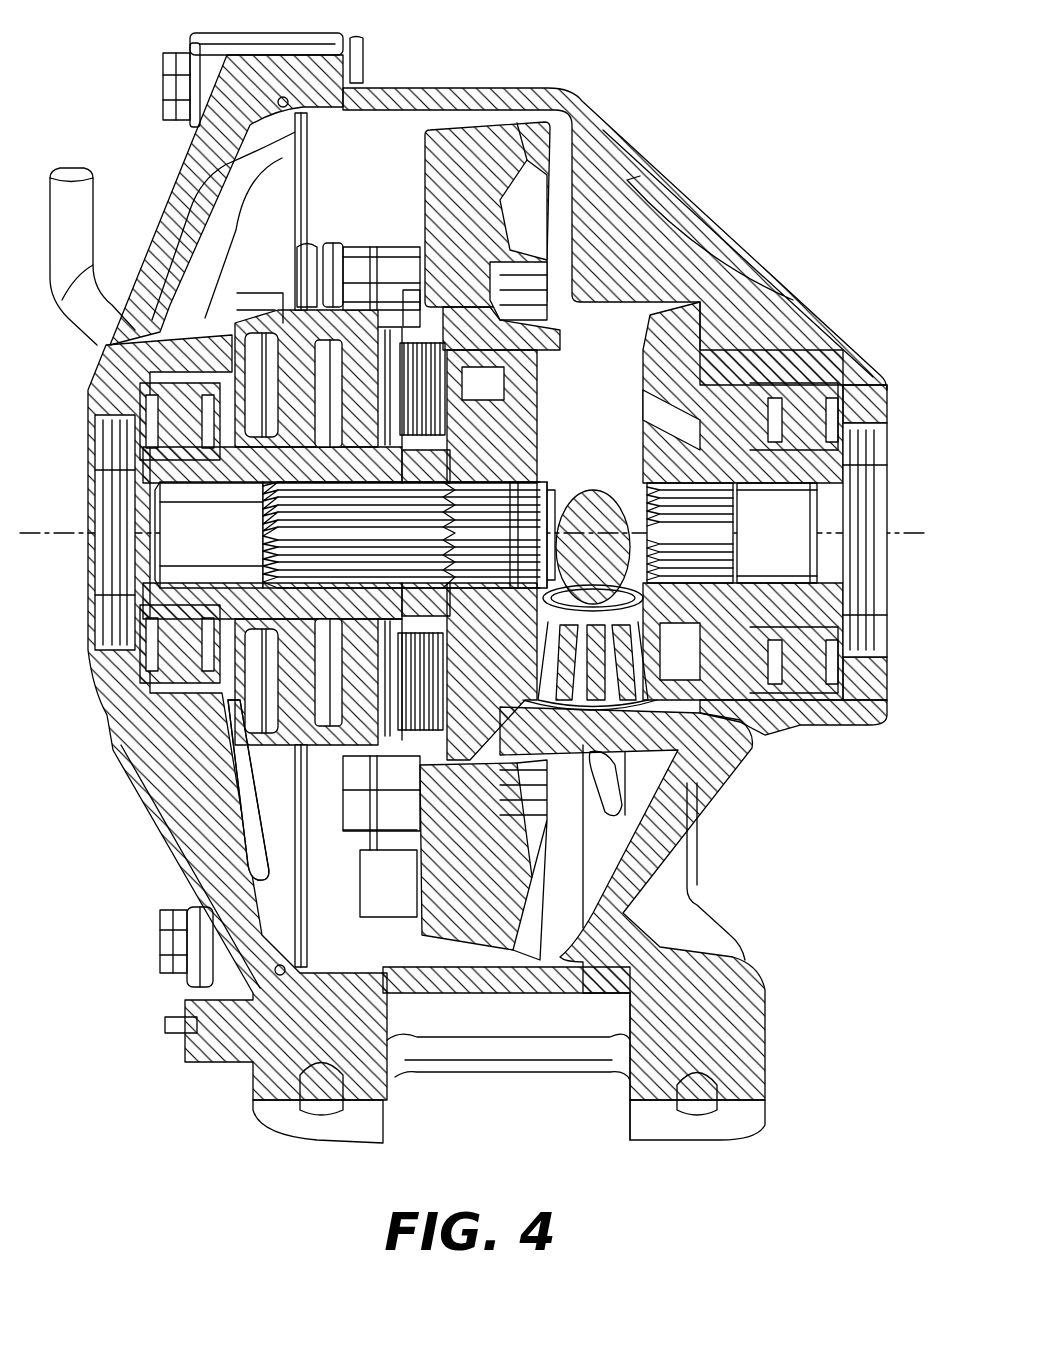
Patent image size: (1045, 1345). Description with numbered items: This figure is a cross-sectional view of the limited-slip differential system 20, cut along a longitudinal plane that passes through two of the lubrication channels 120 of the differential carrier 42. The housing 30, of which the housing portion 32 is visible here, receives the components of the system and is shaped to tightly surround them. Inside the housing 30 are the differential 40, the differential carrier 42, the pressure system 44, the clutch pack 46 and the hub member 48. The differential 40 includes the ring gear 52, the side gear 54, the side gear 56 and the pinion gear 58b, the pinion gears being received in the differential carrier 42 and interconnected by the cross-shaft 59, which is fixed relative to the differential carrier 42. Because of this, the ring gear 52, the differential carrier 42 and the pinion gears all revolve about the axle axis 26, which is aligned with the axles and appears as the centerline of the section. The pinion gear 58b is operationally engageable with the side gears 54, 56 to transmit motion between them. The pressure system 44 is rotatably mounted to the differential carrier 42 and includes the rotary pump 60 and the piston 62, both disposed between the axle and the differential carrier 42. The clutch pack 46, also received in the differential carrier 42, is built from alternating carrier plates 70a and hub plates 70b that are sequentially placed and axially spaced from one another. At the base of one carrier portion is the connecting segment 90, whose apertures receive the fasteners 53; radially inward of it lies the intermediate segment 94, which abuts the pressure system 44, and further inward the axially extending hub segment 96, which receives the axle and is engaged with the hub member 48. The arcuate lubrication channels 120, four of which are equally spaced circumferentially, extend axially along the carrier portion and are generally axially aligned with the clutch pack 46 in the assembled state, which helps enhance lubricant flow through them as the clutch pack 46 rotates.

The limited-slip differential system 20 is at (477, 572).
The axle axis 26 is at (893, 532).
The housing 30 is at (197, 153).
The housing portion 32 is at (643, 163).
The differential 40 is at (360, 497).
The differential carrier 42 is at (287, 792).
The pressure system 44 is at (300, 740).
The clutch pack 46 is at (556, 358).
The hub member 48 is at (287, 598).
The ring gear 52 is at (523, 198).
The fasteners 53 is at (312, 272).
The side gear 54 is at (517, 452).
The side gear 56 is at (660, 395).
The pinion gear 58b is at (752, 715).
The cross-shaft 59 is at (598, 520).
The rotary pump 60 is at (320, 345).
The piston 62 is at (346, 298).
The carrier plates 70a is at (404, 322).
The hub plates 70b is at (426, 455).
The connecting segment 90 is at (342, 292).
The intermediate segment 94 is at (292, 381).
The hub segment 96 is at (174, 470).
The lubrication channels 120 is at (404, 290).